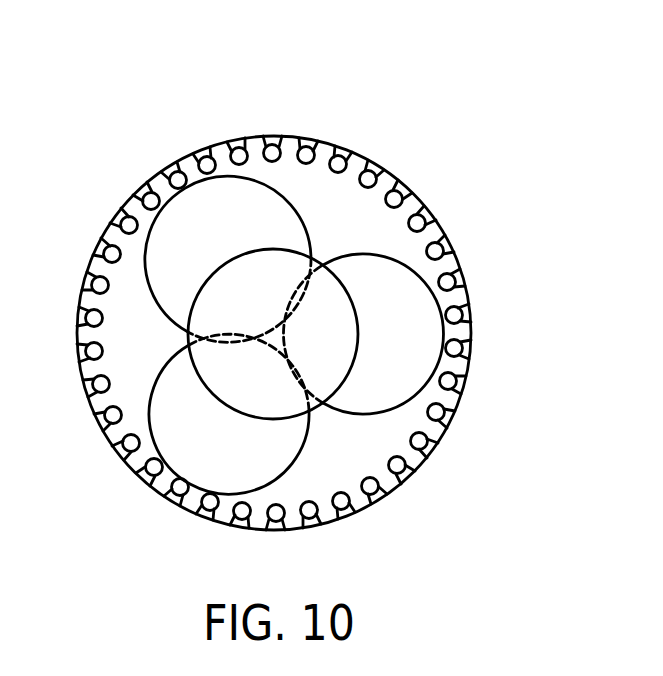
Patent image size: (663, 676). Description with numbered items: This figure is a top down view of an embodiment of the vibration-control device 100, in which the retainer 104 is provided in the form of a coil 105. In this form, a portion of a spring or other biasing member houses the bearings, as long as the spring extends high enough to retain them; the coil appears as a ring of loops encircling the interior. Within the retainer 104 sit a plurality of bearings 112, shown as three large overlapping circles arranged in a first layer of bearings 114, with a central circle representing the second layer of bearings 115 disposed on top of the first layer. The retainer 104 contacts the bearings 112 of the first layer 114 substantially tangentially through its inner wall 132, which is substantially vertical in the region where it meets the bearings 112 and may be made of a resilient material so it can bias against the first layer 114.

The device 100 is at (370, 140).
The retainer 104 is at (425, 231).
The coil 105 is at (112, 437).
The bearings 112 is at (315, 267).
The first layer of bearings 114 is at (410, 260).
The second layer of bearings 115 is at (231, 406).
The inner wall 132 is at (450, 329).